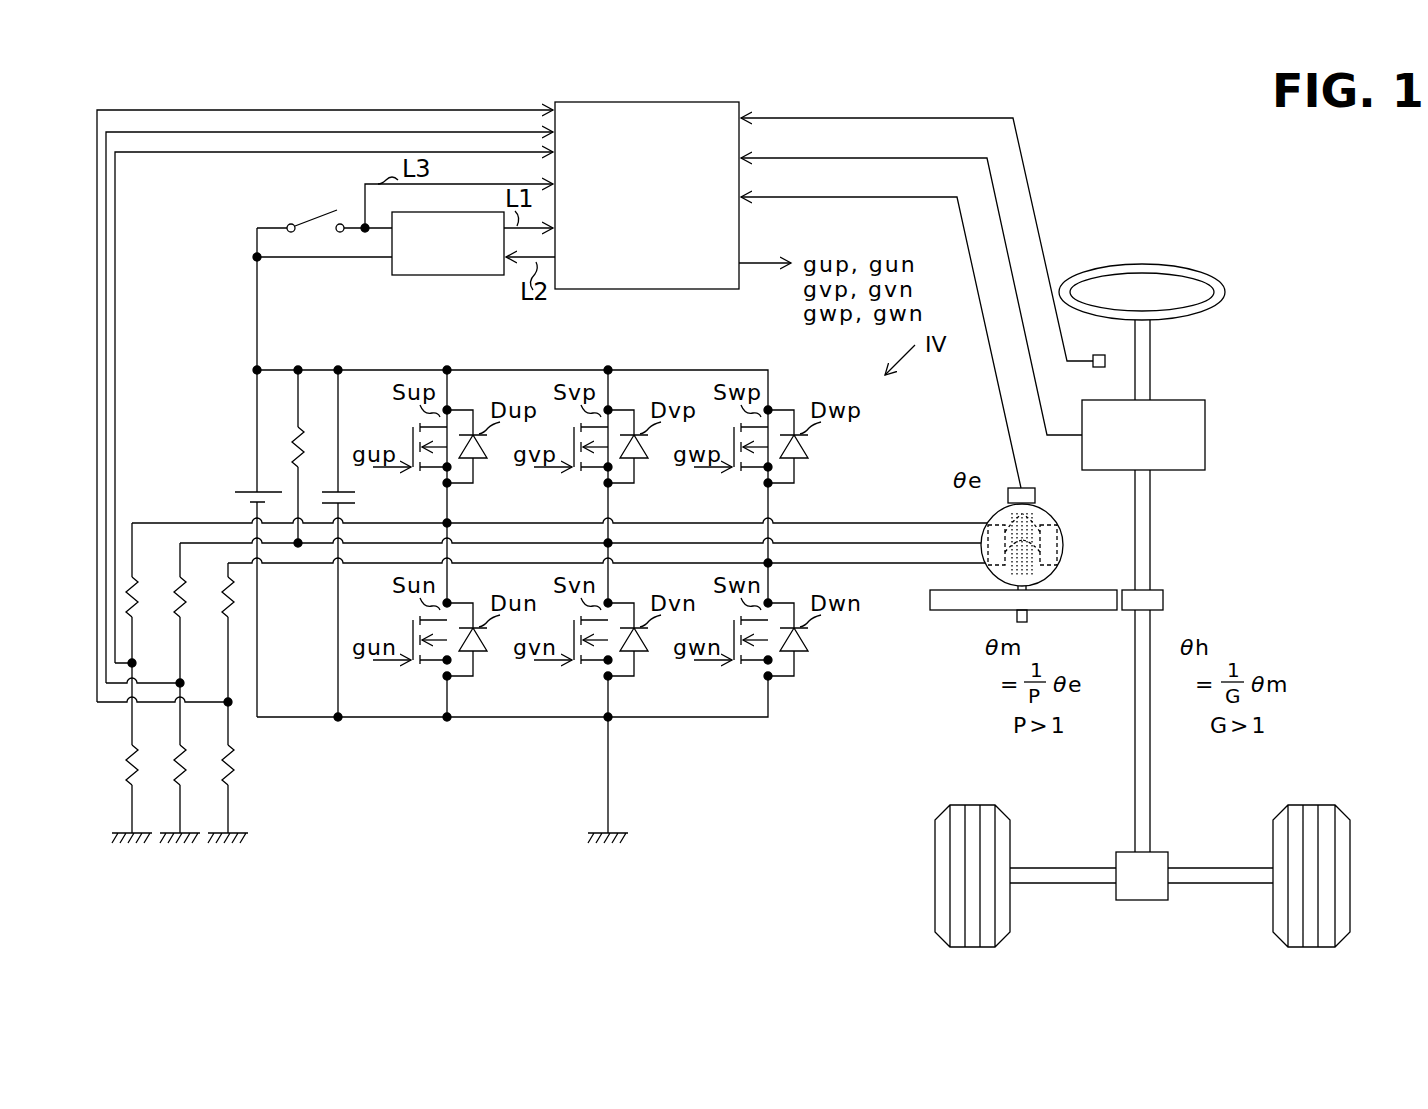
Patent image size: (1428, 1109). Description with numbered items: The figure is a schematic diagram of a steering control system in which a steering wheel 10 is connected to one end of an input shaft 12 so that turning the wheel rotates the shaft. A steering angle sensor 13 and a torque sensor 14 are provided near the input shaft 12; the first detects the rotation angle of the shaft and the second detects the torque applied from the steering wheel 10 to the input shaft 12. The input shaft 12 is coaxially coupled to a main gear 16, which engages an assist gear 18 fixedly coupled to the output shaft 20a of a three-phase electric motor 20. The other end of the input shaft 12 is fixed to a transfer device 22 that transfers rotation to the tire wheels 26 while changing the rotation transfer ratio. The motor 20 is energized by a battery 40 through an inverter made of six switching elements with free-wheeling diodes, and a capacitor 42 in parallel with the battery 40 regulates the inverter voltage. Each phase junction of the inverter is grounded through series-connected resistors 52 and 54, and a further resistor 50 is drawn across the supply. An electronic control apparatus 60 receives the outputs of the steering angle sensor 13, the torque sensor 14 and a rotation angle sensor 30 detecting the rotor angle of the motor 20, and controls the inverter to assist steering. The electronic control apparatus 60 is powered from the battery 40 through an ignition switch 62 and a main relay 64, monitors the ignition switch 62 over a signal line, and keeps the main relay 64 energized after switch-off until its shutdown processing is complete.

The steering wheel 10 is at (1226, 293).
The input shaft 12 is at (1151, 360).
The steering angle sensor 13 is at (1093, 371).
The torque sensor 14 is at (1206, 434).
The main gear 16 is at (1163, 590).
The assist gear 18 is at (1099, 590).
The multi-phase electric motor 20 is at (1063, 523).
The output shaft 20a is at (1029, 616).
The transfer device 22 is at (1162, 852).
The tire wheels 26 is at (973, 805).
The rotation angle sensor 30 is at (1036, 496).
The battery 40 is at (240, 490).
The capacitor 42 is at (355, 498).
The voltage sensor resistor 50 is at (292, 433).
The resistor 52 is at (126, 757).
The resistor 54 is at (160, 583).
The electronic control apparatus 60 is at (711, 102).
The ignition switch 62 is at (319, 213).
The main relay 64 is at (412, 275).